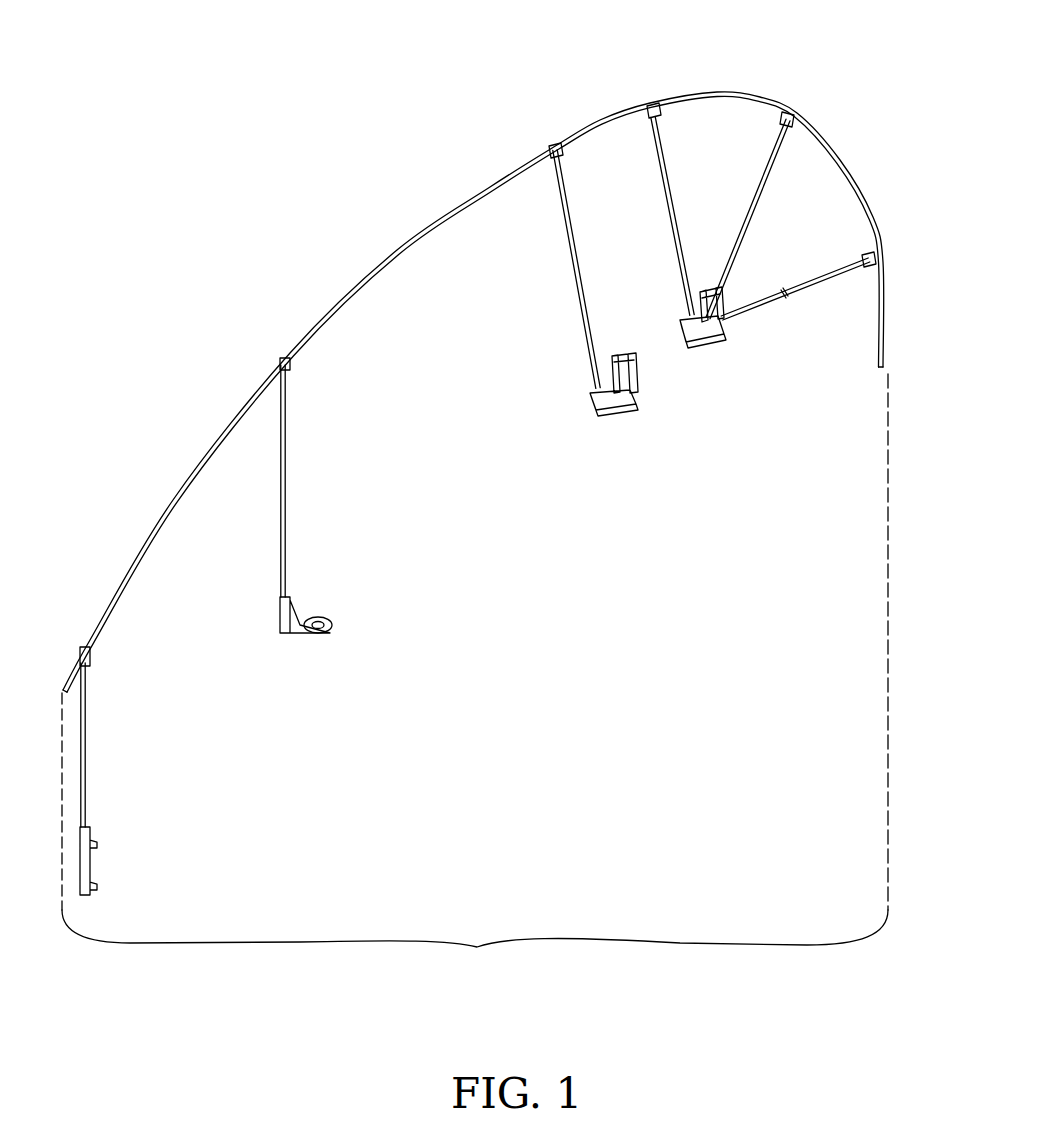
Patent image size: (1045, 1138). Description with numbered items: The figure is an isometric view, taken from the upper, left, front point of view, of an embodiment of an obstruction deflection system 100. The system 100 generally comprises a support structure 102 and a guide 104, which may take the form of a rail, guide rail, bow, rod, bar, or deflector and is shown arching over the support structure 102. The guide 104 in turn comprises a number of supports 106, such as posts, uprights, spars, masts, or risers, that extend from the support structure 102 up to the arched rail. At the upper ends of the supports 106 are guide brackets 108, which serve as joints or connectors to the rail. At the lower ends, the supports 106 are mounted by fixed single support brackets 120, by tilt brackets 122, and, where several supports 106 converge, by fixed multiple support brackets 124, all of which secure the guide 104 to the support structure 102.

The obstruction deflection system 100 is at (335, 150).
The support structure 102 is at (477, 947).
The guide 104 is at (397, 250).
The supports 106 is at (565, 220).
The guide brackets 108 is at (285, 357).
The fixed single support brackets 120 is at (288, 577).
The tilt brackets 122 is at (687, 315).
The fixed multiple support brackets 124 is at (683, 330).